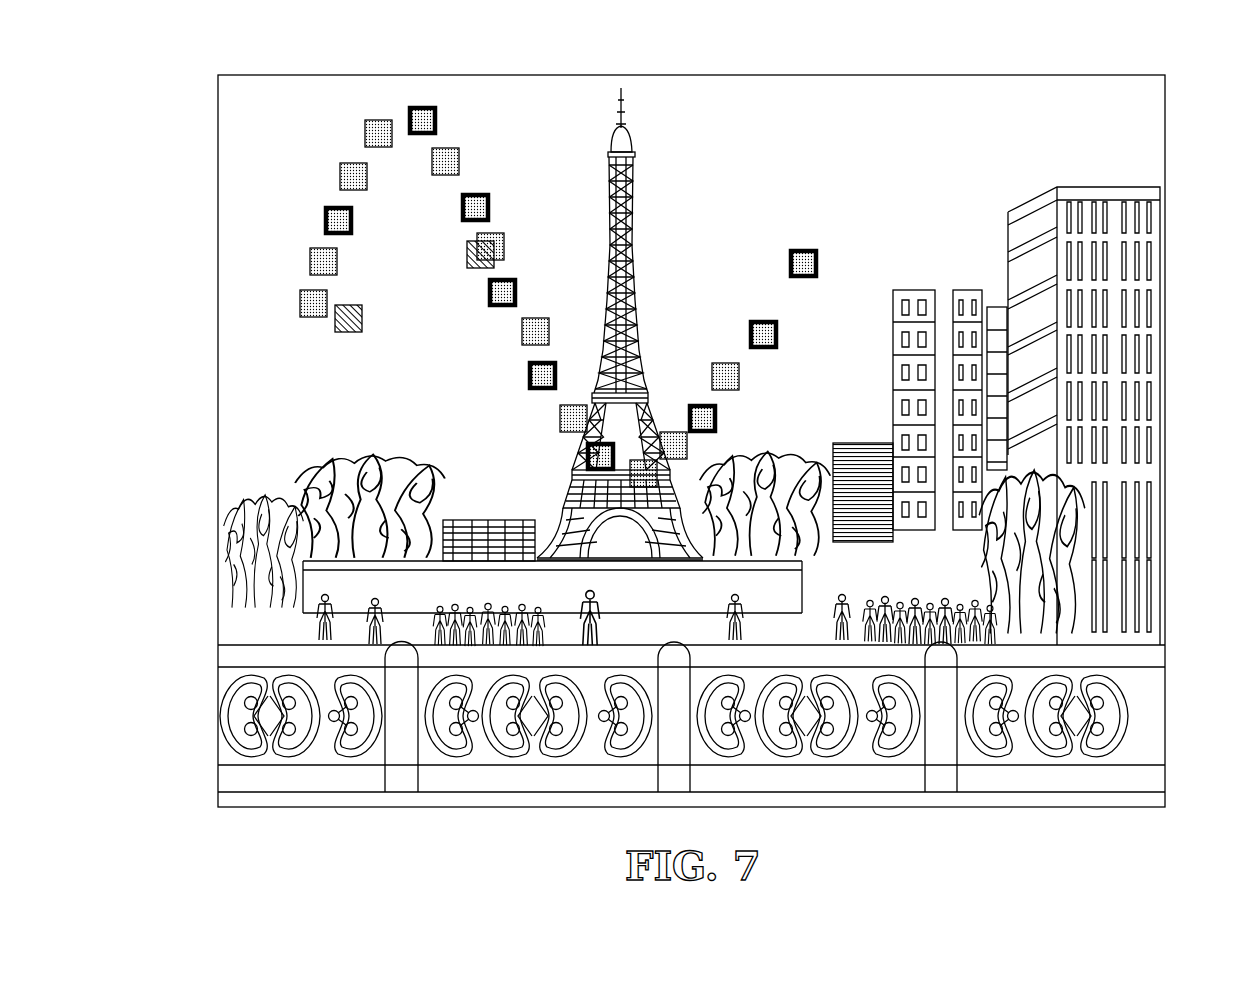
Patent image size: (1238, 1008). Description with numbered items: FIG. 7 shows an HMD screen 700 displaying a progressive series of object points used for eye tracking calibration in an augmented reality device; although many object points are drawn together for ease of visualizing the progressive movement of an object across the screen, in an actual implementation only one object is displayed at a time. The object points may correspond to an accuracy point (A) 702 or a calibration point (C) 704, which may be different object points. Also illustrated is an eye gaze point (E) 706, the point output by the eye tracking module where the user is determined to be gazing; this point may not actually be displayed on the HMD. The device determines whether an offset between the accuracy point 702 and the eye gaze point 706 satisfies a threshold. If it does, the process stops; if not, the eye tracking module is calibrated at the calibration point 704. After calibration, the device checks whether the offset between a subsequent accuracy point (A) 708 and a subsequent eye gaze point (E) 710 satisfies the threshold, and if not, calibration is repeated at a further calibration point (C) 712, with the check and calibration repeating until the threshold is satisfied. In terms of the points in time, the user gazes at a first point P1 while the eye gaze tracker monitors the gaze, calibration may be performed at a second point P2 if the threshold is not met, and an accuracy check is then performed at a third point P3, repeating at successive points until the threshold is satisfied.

The augmented reality scene 700 is at (118, 72).
The accuracy point (A) 702 is at (460, 148).
The calibration point (C) 704 is at (491, 198).
The eye gaze point (E) 706 is at (360, 306).
The subsequent accuracy point (A) 708 is at (504, 241).
The subsequent eye gaze point (E) 710 is at (467, 263).
The calibration point (C) 712 is at (516, 284).
The first point P1 is at (310, 262).
The second point P2 is at (324, 220).
The third point P3 is at (340, 173).